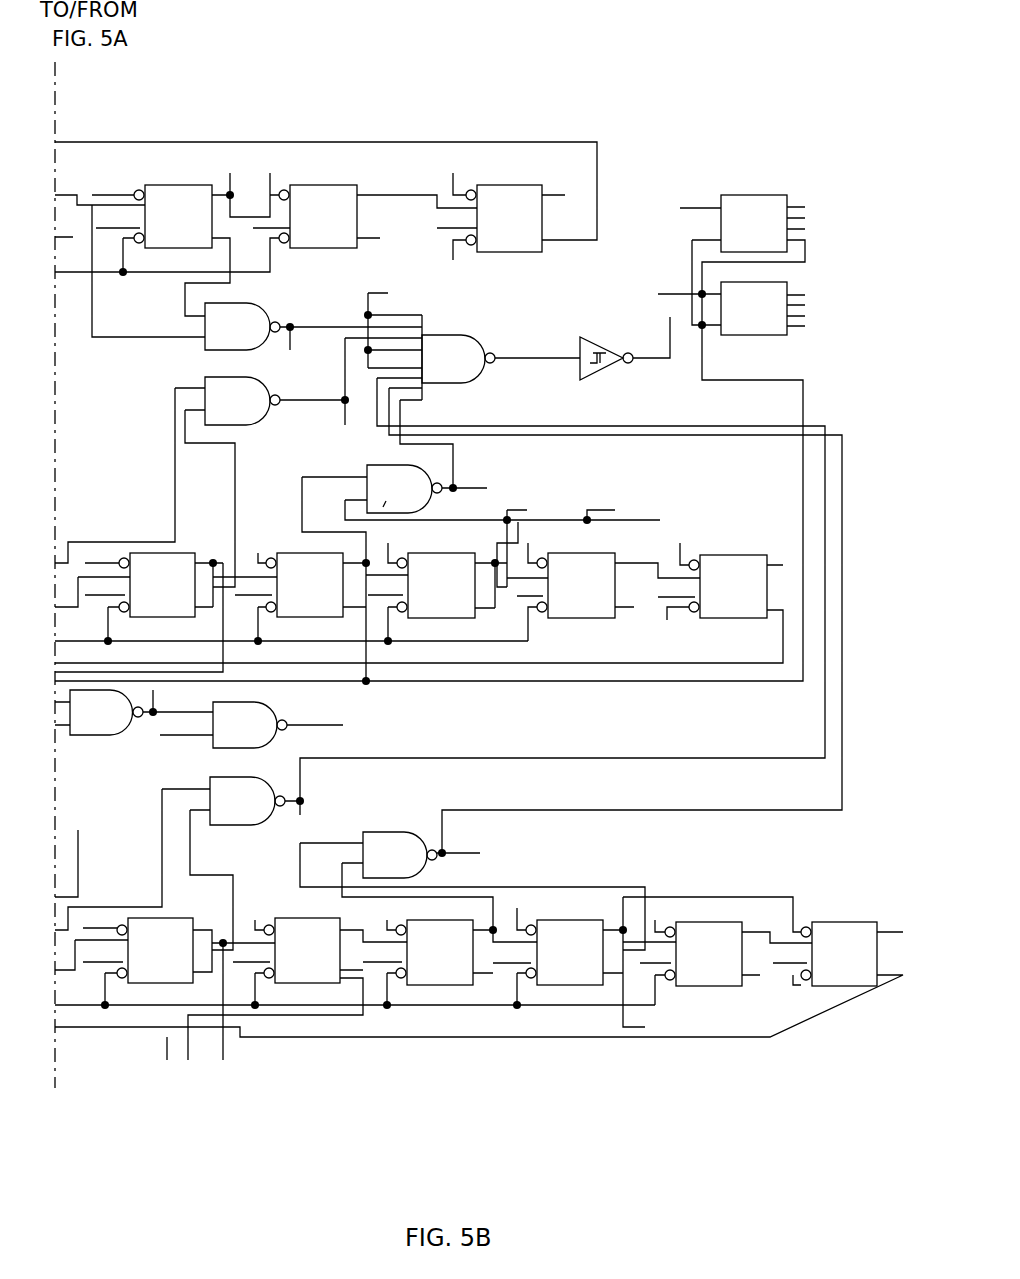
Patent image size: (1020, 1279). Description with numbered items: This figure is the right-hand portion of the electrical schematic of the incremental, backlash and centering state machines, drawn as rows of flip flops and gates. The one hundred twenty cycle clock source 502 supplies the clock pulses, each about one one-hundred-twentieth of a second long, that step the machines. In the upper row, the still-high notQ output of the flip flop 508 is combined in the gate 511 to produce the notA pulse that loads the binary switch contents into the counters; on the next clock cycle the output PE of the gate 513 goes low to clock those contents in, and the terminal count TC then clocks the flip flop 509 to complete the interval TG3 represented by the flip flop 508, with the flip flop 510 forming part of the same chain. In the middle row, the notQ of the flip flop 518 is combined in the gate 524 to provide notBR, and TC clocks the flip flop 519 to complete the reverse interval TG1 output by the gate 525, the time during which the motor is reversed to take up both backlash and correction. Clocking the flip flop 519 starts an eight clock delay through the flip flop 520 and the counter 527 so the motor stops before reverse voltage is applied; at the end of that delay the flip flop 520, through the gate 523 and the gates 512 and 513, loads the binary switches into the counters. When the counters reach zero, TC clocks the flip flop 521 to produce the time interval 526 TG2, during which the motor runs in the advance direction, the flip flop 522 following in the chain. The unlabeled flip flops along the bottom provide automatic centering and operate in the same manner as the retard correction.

The 120 cycle clock source 502 is at (80, 862).
The flip flop 508 is at (158, 229).
The flip flop 509 is at (307, 229).
The flip flop 510 is at (490, 229).
The gate 511 is at (216, 339).
The gate 512 is at (432, 370).
The gate 513 is at (600, 340).
The flip flop 518 is at (143, 597).
The flip flop 519 is at (290, 597).
The flip flop 520 is at (422, 597).
The flip flop 521 is at (562, 597).
The flip flop 522 is at (714, 597).
The gate 523 is at (377, 500).
The gate 524 is at (216, 412).
The gate 525 is at (223, 737).
The time interval TG2 526 is at (615, 510).
The counter 527 is at (734, 235).